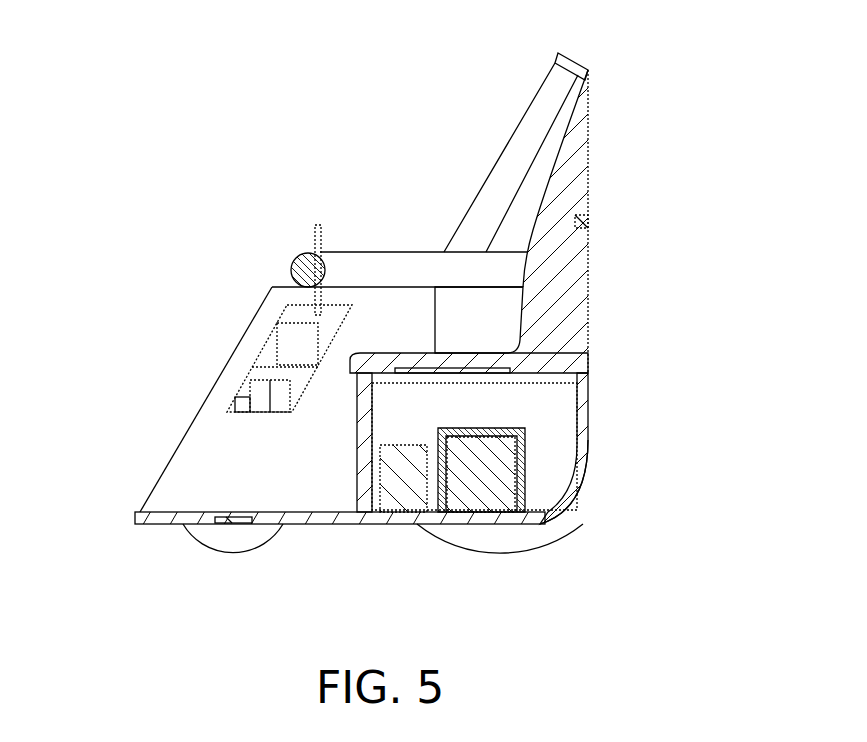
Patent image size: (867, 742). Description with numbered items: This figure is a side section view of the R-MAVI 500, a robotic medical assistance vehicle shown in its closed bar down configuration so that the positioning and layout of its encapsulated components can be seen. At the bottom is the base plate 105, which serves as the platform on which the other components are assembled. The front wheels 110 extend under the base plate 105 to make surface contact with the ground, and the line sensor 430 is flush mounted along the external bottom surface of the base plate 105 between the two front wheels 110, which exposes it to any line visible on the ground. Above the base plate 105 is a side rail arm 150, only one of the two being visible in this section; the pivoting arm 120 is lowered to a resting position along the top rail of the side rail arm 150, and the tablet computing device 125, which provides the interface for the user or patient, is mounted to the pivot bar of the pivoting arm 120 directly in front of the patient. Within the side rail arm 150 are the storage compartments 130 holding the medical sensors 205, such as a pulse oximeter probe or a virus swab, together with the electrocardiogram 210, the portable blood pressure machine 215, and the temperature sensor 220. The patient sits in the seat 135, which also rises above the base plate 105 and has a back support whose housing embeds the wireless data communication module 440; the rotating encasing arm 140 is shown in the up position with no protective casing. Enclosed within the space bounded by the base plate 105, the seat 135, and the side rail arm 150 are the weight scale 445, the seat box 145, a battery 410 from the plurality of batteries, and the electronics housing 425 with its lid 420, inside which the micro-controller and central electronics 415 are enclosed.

The R-MAVI 500 is at (195, 132).
The base plate 105 is at (162, 524).
The front wheels 110 is at (233, 556).
The pivoting arm 120 is at (357, 252).
The tablet computing device 125 is at (320, 225).
The storage compartments 130 is at (272, 293).
The seat 135 is at (492, 345).
The rotating encasing arm 140 is at (509, 140).
The seat box 145 is at (357, 443).
The side rail arm 150 is at (183, 438).
The medical sensors 205 is at (277, 345).
The electrocardiogram 210 is at (260, 405).
The portable blood pressure machine 215 is at (280, 390).
The temperature sensor 220 is at (243, 410).
The battery 410 is at (385, 445).
The micro-controller and central electronics 415 is at (457, 437).
The lid 420 is at (513, 428).
The electronics housing 425 is at (555, 448).
The line sensor 430 is at (232, 518).
The wireless data communication module 440 is at (590, 222).
The weight scale 445 is at (436, 355).